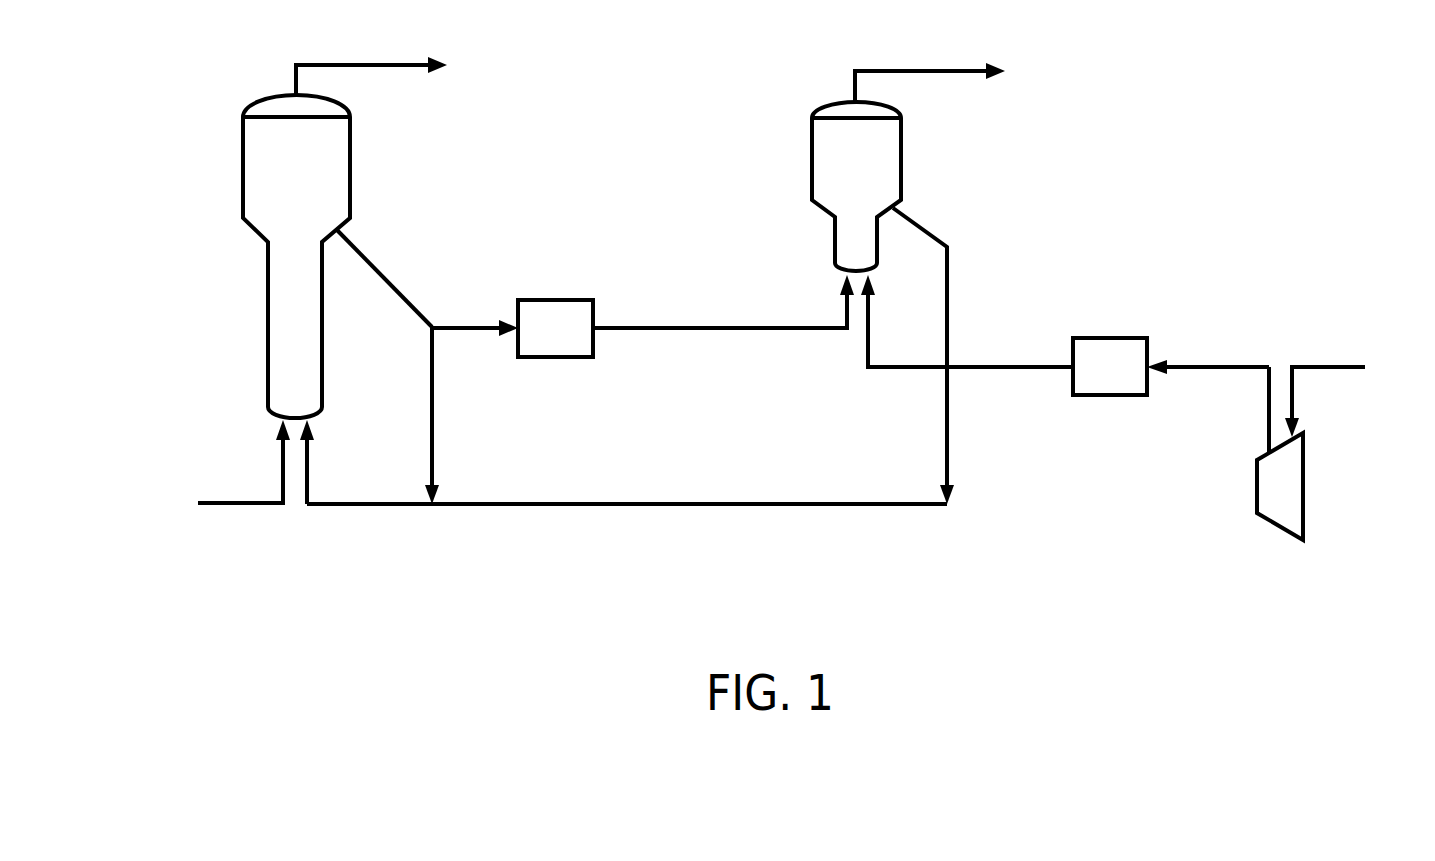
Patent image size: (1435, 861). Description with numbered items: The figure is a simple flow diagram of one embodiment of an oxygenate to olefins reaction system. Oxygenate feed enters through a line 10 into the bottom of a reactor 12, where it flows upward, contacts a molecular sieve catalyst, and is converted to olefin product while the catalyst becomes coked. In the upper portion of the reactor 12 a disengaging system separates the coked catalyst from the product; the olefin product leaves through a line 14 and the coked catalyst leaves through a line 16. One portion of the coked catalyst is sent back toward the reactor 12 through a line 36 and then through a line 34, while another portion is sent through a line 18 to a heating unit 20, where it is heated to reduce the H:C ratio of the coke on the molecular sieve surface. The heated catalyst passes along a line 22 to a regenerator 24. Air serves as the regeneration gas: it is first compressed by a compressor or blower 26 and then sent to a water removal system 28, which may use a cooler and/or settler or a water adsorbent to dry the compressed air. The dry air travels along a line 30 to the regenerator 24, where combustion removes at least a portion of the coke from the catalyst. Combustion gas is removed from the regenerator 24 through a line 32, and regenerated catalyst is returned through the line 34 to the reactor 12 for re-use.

The line 10 is at (250, 505).
The reactor 12 is at (243, 155).
The line 14 is at (348, 65).
The line 16 is at (380, 276).
The line 18 is at (457, 328).
The heating unit 20 is at (550, 357).
The stripped catalyst line 22 is at (690, 328).
The regenerator 24 is at (901, 140).
The compressor or blower 26 is at (1271, 525).
The water removal system 28 is at (1110, 338).
The heated air line 30 is at (868, 355).
The line 32 is at (908, 71).
The line 34 is at (627, 506).
The line 36 is at (432, 434).